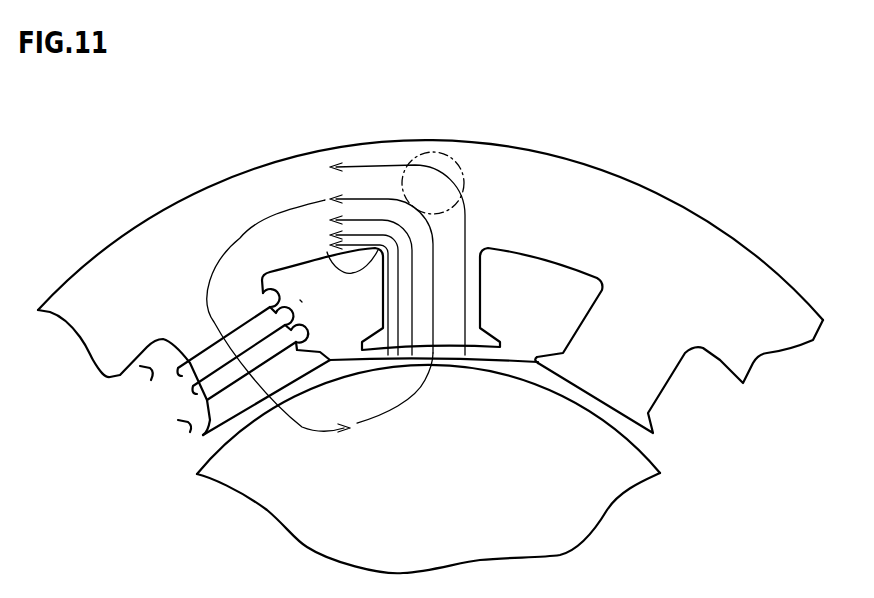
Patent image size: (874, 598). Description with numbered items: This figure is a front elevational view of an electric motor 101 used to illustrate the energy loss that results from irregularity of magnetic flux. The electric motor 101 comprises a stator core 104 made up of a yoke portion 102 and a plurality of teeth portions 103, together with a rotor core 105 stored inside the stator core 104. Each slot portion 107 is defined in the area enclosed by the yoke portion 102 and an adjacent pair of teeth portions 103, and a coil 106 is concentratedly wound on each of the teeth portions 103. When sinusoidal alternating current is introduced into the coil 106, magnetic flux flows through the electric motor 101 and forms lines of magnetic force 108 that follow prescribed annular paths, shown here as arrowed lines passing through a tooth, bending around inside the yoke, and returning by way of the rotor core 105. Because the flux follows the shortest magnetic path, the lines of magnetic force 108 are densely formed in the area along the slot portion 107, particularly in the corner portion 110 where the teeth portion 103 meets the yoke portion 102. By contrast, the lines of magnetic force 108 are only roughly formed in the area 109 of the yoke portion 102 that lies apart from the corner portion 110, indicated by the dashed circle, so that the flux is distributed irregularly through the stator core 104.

The electric motor 101 is at (127, 162).
The yoke portion 102 is at (558, 208).
The teeth portion 103 is at (628, 347).
The stator core 104 is at (697, 92).
The rotor core 105 is at (297, 492).
The coil 106 is at (238, 405).
The slot portion 107 is at (320, 310).
The lines of magnetic force 108 is at (368, 163).
The area of yoke portion 109 is at (433, 152).
The corner portion 110 is at (328, 255).